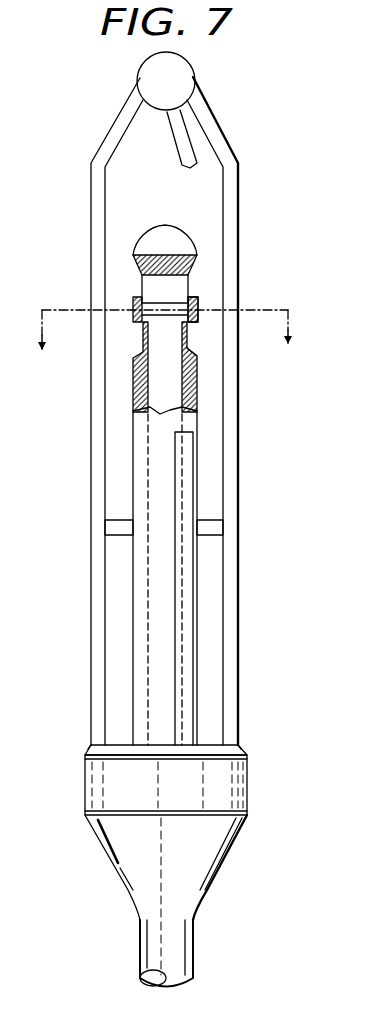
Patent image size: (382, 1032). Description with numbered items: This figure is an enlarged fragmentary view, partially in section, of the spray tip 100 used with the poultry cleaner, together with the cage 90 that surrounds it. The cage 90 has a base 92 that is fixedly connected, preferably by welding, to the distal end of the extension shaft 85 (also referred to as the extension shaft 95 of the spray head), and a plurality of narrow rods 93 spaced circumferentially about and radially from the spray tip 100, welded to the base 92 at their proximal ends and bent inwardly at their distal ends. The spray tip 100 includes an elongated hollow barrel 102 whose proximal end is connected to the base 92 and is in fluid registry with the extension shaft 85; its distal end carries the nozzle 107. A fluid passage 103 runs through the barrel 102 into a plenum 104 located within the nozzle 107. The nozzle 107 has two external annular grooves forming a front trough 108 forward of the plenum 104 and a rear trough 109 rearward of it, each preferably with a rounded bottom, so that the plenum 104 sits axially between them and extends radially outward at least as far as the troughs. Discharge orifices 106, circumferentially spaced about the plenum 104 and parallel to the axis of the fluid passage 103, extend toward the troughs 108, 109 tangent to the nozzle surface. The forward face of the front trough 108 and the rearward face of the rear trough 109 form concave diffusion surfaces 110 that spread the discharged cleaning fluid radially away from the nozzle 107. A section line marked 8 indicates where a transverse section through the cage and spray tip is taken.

The section line 8- 8 is at (165, 349).
The extension shaft 85 is at (155, 945).
The cage 90 is at (88, 627).
The base 92 is at (117, 867).
The rod 93 is at (232, 702).
The extension shaft 95 is at (113, 528).
The spray tip 100 is at (130, 448).
The barrel 102 is at (160, 475).
The fluid passage 103 is at (164, 366).
The plenum 104 is at (148, 308).
The discharge orifices 106 is at (140, 296).
The nozzle 107 is at (203, 300).
The front trough 108 is at (180, 282).
The rear trough 109 is at (190, 352).
The diffusion surfaces 110 is at (133, 258).